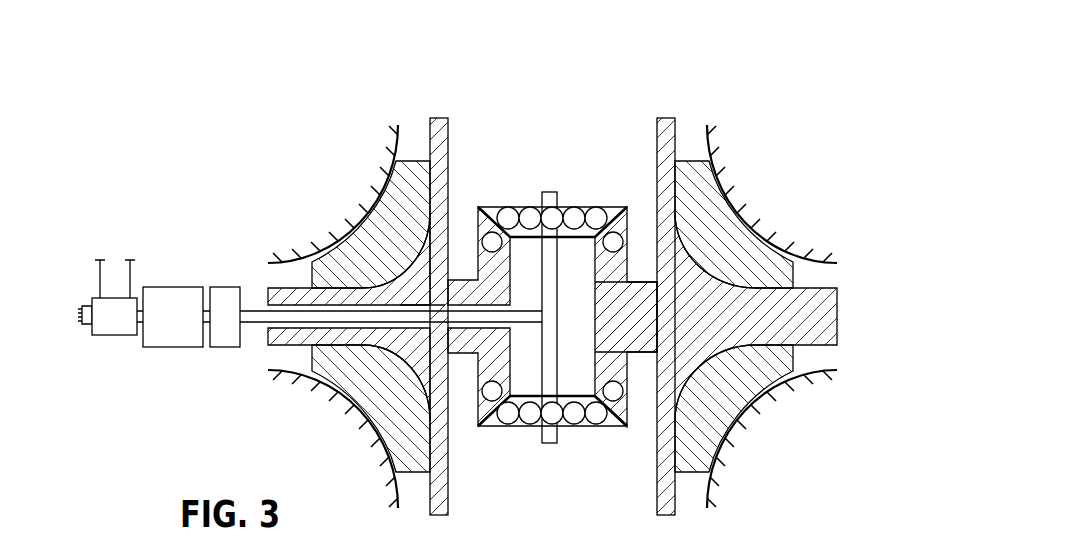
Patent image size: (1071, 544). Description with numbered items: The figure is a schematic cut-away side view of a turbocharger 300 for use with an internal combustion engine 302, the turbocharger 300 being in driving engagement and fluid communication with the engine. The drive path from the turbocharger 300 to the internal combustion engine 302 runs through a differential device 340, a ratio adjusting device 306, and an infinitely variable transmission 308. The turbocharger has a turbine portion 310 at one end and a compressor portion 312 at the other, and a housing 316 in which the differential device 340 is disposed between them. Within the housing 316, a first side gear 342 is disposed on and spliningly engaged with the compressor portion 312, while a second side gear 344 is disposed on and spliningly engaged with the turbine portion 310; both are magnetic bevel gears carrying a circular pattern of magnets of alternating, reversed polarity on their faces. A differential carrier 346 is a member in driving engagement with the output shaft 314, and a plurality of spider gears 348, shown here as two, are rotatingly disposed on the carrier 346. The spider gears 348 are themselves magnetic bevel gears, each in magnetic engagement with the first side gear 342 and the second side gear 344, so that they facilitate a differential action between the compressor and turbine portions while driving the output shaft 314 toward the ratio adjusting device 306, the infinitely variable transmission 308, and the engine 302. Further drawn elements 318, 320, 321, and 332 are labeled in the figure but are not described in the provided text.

The turbocharger 300 is at (727, 66).
The internal combustion engine 302 is at (112, 337).
The ratio adjusting device 306 is at (222, 348).
The infinitely variable transmission 308 is at (173, 348).
The turbine portion 310 is at (837, 316).
The compressor portion 312 is at (268, 293).
The output shaft 314 is at (255, 323).
The housing 316 is at (398, 130).
The electrical terminal 318 is at (100, 297).
The electrical terminal 320 is at (131, 290).
The spacer 321 is at (424, 305).
The output gear 332 is at (80, 323).
The differential device 340 is at (522, 155).
The first side gear 342 is at (512, 258).
The second side gear 344 is at (595, 378).
The differential carrier 346 is at (560, 255).
The spider gears 348 is at (596, 207).